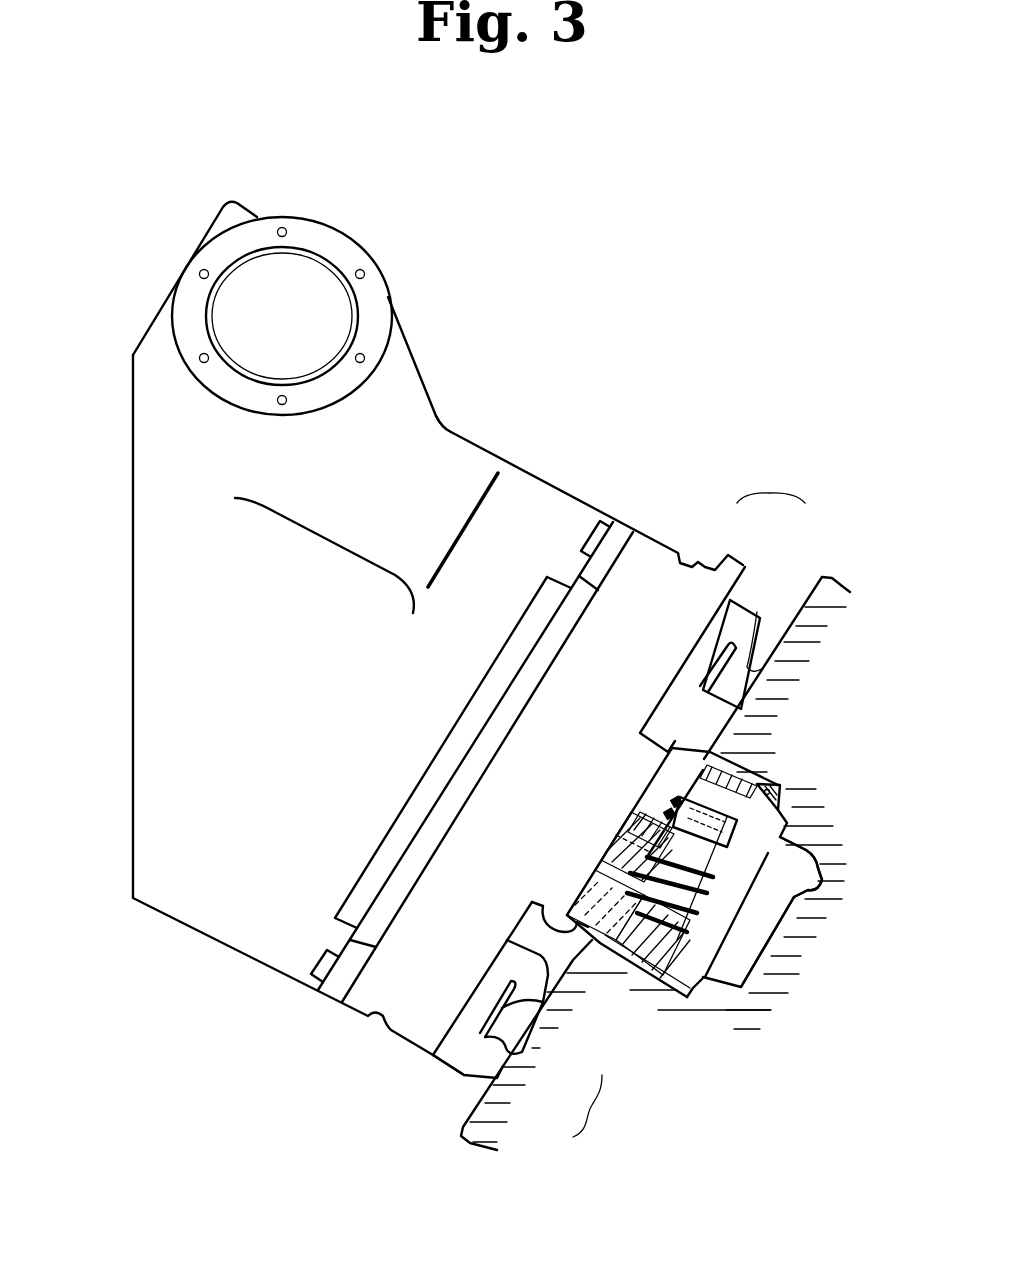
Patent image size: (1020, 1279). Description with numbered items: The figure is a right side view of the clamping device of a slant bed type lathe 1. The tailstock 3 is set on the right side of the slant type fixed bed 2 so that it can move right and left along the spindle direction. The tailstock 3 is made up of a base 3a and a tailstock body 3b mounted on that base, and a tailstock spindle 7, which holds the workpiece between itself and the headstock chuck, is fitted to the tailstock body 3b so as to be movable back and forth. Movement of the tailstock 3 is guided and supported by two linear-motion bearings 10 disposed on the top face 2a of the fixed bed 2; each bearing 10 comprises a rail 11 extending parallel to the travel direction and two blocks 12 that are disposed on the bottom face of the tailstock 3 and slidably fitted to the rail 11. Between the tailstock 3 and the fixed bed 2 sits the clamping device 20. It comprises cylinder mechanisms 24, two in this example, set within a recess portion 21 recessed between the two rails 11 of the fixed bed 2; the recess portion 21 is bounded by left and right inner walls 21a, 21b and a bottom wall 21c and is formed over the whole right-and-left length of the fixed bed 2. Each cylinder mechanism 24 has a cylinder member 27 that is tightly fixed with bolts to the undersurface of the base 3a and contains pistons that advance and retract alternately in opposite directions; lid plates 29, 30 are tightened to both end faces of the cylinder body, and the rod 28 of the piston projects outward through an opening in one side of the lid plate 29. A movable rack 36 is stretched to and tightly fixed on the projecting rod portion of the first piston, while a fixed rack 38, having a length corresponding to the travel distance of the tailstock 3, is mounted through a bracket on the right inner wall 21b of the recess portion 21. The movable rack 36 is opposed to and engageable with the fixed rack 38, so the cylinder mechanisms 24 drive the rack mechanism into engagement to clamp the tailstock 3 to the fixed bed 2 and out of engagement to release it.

The lathe 1 is at (92, 260).
The fixed bed 2 is at (458, 1128).
The top face 2a is at (473, 1108).
The tailstock 3 is at (122, 474).
The base 3a is at (660, 533).
The tailstock body 3b is at (458, 440).
The tailstock spindle 7 is at (305, 244).
The linear-motion bearings 10 is at (689, 804).
The rail 11 is at (767, 612).
The blocks 12 is at (757, 612).
The clamping device 20 is at (656, 799).
The recess portion 21 is at (765, 932).
The left inner wall 21a is at (680, 983).
The right inner wall 21b is at (772, 788).
The bottom wall 21c is at (800, 900).
The cylinder mechanism 24 is at (720, 948).
The cylinder member 27 is at (760, 918).
The spacer 28 is at (610, 851).
The lid plate 29 is at (736, 870).
The lid plate 30 is at (538, 915).
The movable rack 36 is at (670, 800).
The fixed rack 38 is at (700, 800).